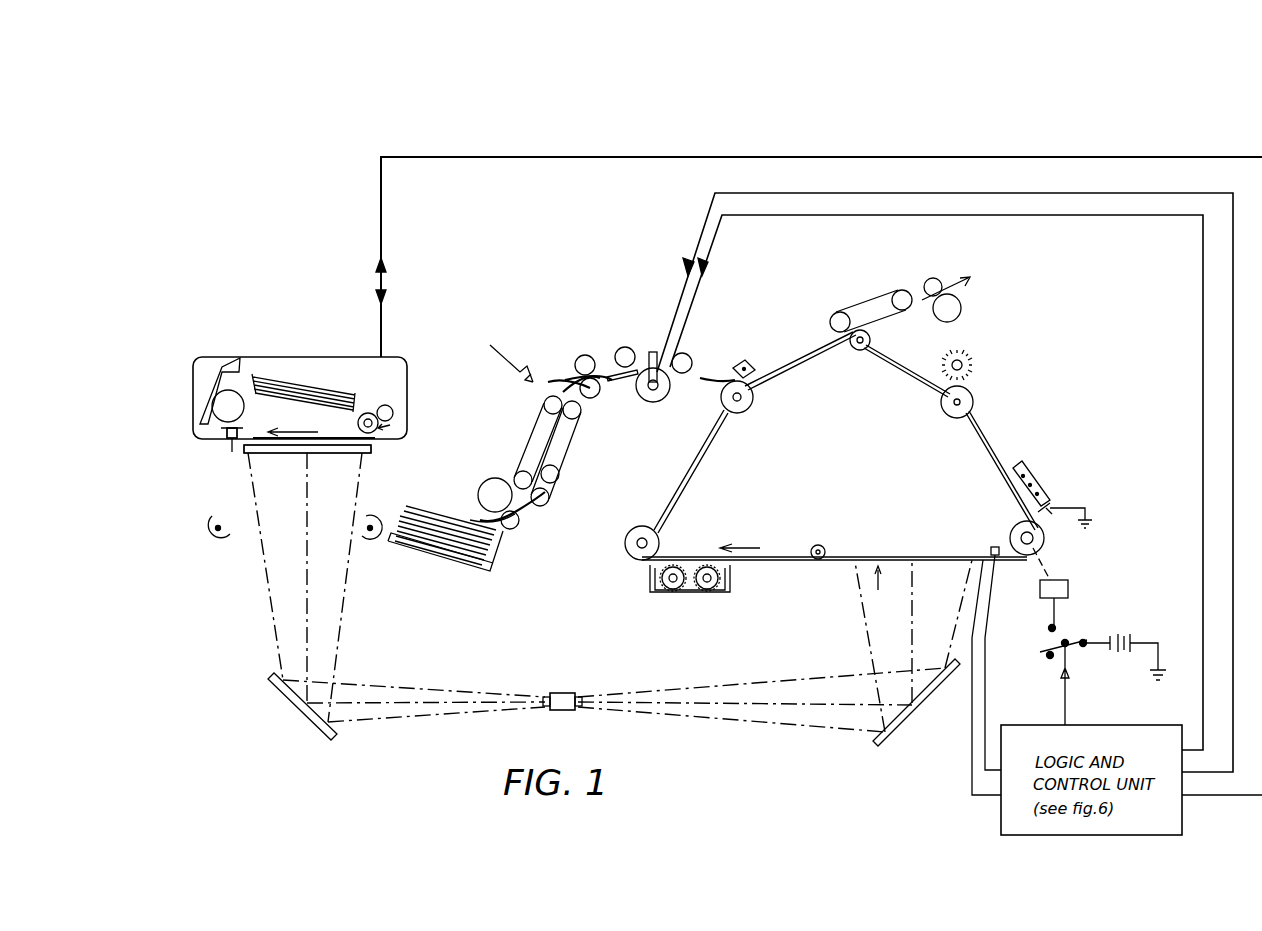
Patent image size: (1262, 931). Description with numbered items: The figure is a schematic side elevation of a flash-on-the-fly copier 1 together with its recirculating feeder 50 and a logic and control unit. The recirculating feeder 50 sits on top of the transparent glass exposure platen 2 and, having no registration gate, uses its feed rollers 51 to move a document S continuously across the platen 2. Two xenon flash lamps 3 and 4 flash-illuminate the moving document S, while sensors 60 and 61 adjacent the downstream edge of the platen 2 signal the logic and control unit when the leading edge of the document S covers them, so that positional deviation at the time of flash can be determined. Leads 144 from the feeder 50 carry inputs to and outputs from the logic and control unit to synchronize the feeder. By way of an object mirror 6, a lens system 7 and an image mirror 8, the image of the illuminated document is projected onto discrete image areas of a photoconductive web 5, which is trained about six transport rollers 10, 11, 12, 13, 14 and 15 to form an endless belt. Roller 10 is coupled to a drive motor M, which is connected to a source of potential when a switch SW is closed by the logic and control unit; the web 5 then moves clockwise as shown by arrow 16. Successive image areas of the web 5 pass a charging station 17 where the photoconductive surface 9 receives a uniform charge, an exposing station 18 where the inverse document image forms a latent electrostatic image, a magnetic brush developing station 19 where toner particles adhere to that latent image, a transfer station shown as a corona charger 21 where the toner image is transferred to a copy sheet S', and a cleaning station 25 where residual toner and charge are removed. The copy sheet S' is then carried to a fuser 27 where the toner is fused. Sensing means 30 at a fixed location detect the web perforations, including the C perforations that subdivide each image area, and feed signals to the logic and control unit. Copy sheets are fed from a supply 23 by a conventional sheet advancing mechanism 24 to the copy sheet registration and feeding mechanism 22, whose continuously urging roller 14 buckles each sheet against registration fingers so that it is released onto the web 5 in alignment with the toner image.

The copier 1 is at (503, 355).
The exposure platen 2 is at (374, 445).
The xenon flash lamp 3 is at (206, 532).
The xenon flash lamp 4 is at (368, 532).
The photoconductive web 5 is at (795, 366).
The object mirror 6 is at (294, 702).
The lens system 7 is at (562, 694).
The image mirror 8 is at (904, 706).
The photoconductive surface 9 is at (1013, 464).
The transport roller 10 is at (1016, 522).
The transport roller 11 is at (822, 546).
The transport roller 12 is at (656, 536).
The transport roller 13 is at (738, 413).
The roller 14 is at (626, 347).
The transport roller 15 is at (944, 416).
The arrow 16 is at (743, 548).
The charging station 17 is at (1040, 478).
The exposing station 18 is at (876, 588).
The magnetic brush developing station 19 is at (718, 594).
The corona charger 21 is at (744, 358).
The copy sheet registration and feeding mechanism 22 is at (645, 402).
The supply 23 is at (446, 516).
The copier sheet advancing mechanism 24 is at (575, 484).
The cleaning station 25 is at (966, 364).
The fuser 27 is at (944, 290).
The sensing means 30 is at (992, 546).
The recirculating feeder 50 is at (297, 357).
The feed rollers 51 is at (392, 423).
The sensor 60 is at (226, 436).
The sensor 61 is at (232, 433).
The leads 144 is at (552, 157).
The document S is at (337, 451).
The copy sheet S' is at (607, 435).
The C perforations C is at (346, 453).
The drive motor M is at (1050, 573).
The switch SW is at (1060, 636).